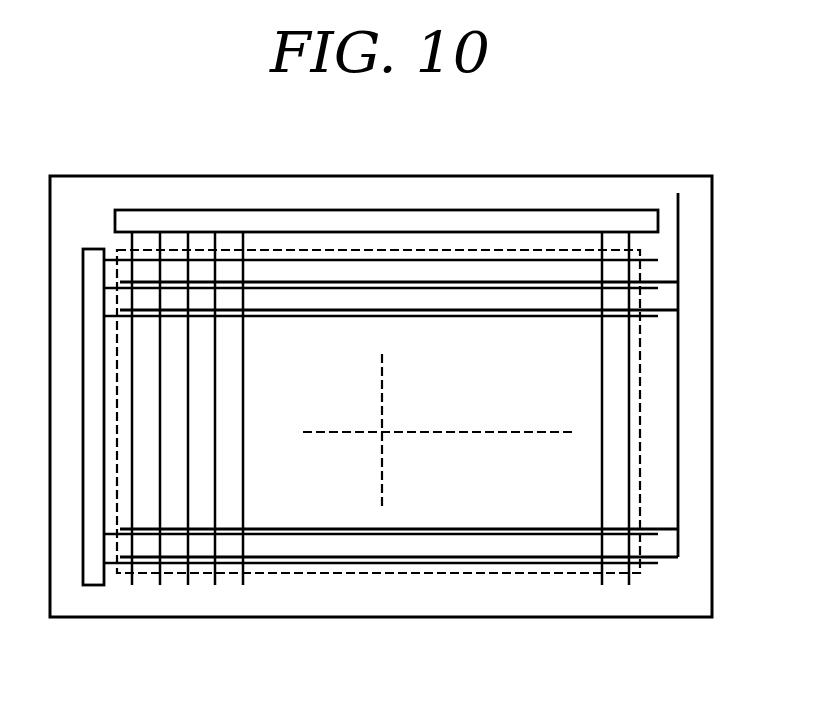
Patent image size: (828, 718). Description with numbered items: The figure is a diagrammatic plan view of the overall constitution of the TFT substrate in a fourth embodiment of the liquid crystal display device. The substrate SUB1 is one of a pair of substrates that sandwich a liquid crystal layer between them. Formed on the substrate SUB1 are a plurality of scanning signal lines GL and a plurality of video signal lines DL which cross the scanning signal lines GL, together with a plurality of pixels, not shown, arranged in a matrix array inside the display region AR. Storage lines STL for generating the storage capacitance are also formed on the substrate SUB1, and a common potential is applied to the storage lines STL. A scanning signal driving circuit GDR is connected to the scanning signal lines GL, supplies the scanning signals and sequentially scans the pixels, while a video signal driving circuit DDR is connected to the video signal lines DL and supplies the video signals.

The substrate SUB1 is at (225, 176).
The scanning signal driving circuit GDR is at (95, 248).
The video signal driving circuit DDR is at (400, 210).
The display region AR is at (388, 575).
The video signal lines DL is at (243, 350).
The scanning signal lines GL is at (142, 535).
The storage lines STL is at (667, 558).